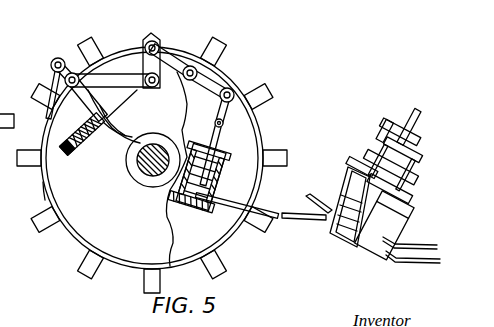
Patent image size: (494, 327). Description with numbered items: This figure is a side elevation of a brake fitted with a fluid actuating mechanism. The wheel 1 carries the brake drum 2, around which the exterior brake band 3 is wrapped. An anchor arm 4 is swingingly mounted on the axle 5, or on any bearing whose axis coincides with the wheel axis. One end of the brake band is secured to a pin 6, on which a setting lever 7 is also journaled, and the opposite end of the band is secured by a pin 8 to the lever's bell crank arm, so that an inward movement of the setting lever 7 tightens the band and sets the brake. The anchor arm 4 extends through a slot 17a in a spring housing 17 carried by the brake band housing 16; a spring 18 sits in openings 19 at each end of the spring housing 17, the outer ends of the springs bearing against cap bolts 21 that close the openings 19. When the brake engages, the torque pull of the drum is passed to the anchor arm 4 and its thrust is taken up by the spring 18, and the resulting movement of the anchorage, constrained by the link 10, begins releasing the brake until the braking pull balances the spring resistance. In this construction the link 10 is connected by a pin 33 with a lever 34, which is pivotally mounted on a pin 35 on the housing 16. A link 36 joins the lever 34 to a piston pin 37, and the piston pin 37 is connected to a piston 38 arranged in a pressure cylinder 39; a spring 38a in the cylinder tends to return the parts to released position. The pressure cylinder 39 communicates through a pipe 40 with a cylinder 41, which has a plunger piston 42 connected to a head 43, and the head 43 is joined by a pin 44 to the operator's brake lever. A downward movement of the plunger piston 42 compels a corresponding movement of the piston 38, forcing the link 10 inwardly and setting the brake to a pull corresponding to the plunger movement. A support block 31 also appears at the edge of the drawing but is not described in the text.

The wheel 1 is at (85, 45).
The brake drum 2 is at (47, 112).
The exterior brake band 3 is at (45, 192).
The anchor arm 4 is at (106, 125).
The axle 5 is at (138, 170).
The pin 6 is at (72, 73).
The setting lever 7 is at (101, 83).
The pin 8 is at (51, 62).
The link 10 is at (152, 65).
The brake band housing 16 is at (218, 232).
The spring housing 17 is at (123, 99).
The slot 17a is at (118, 130).
The spring 18 is at (93, 130).
The openings 19 is at (88, 122).
The cap bolts 21 is at (69, 148).
The support block 31 is at (7, 103).
The pin 33 is at (159, 46).
The lever 34 is at (175, 57).
The pin 35 is at (222, 65).
The link 36 is at (226, 100).
The piston pin 37 is at (222, 128).
The piston 38 is at (221, 188).
The spring 38a is at (176, 193).
The pressure cylinder 39 is at (226, 160).
The pipe 40 is at (266, 212).
The cylinder 41 is at (385, 226).
The plunger piston 42 is at (352, 178).
The head 43 is at (418, 160).
The pin 44 is at (418, 120).